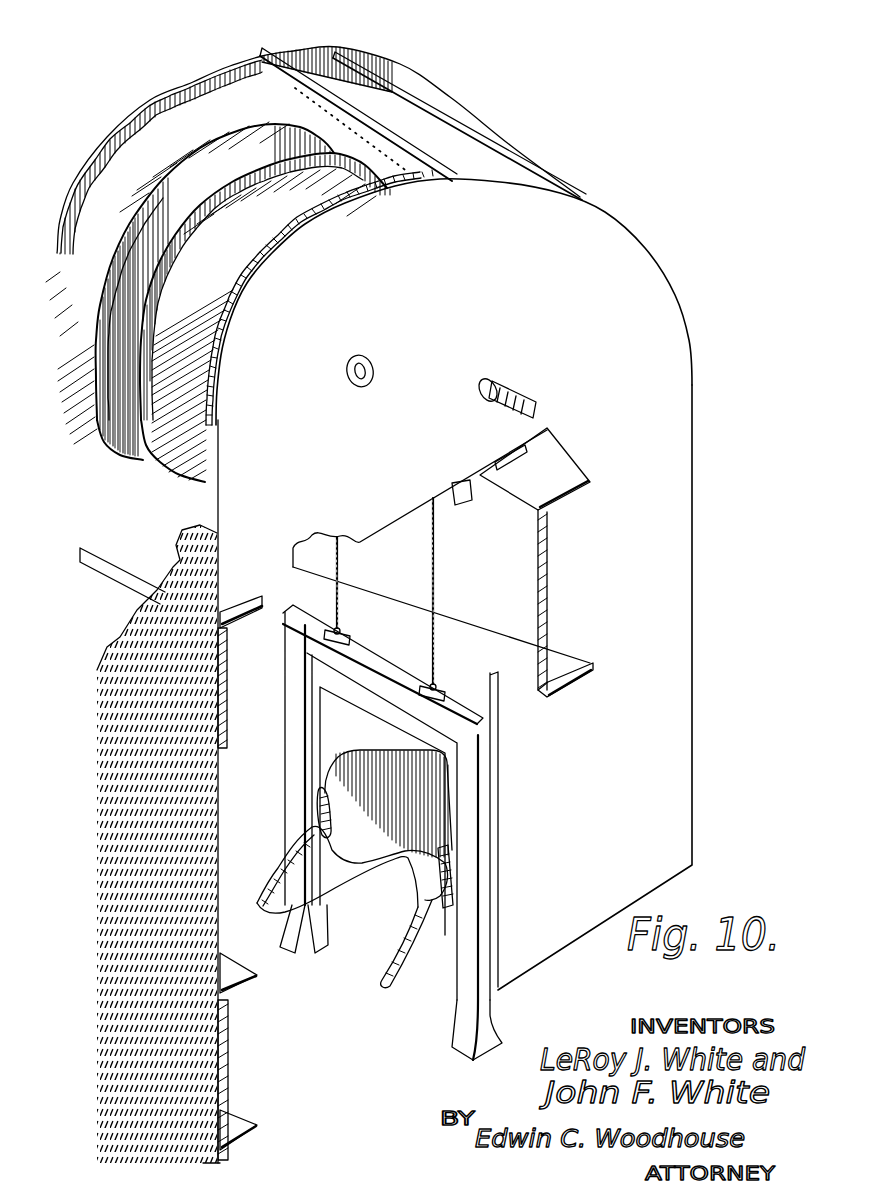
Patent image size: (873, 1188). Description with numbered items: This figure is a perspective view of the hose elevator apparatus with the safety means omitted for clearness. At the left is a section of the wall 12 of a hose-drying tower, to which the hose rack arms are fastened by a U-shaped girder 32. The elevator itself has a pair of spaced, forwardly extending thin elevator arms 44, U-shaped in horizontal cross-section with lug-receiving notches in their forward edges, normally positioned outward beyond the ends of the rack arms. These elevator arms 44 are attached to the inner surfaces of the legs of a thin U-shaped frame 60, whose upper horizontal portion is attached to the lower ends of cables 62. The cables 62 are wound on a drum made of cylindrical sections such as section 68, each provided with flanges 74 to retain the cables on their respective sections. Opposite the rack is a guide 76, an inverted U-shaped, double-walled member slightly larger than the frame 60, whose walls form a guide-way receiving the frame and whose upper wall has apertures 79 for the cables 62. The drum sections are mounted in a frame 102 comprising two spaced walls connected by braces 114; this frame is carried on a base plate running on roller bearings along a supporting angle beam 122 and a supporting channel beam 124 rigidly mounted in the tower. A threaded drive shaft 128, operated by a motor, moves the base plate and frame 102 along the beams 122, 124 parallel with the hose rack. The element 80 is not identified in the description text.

The wall 12 is at (200, 793).
The U-shaped girder 32 is at (227, 1110).
The elevator arms 44 is at (282, 878).
The U-shaped frame 60 is at (373, 703).
The cables 62 is at (340, 563).
The drum section 68 is at (160, 132).
The flanges 74 is at (245, 130).
The guide 76 is at (295, 912).
The apertures 79 is at (347, 640).
The strap 80 is at (318, 948).
The frame 102 is at (343, 77).
The braces 114 is at (303, 72).
The supporting angle beam 122 is at (227, 700).
The supporting channel beam 124 is at (560, 477).
The threaded drive shaft 128 is at (527, 397).